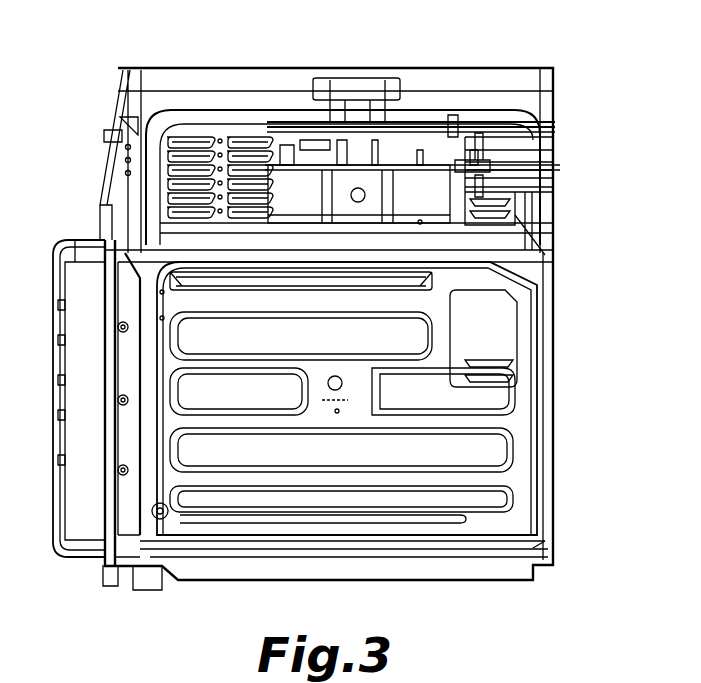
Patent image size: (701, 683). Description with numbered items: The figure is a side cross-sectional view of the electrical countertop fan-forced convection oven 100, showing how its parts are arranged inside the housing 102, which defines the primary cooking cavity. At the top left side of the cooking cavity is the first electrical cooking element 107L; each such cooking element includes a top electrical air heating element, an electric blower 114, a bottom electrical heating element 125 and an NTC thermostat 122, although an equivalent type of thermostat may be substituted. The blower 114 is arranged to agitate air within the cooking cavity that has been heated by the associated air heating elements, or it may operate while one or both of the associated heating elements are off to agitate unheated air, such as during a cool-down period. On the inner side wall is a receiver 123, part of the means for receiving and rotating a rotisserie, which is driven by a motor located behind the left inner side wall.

The fan-forced convection oven 100 is at (562, 197).
The housing 102 is at (558, 521).
The electric blower 114 is at (358, 72).
The first electrical cooking element 107L is at (408, 124).
The NTC thermostat 122 is at (365, 193).
The receiver 123 is at (343, 384).
The bottom electrical heating element 125 is at (370, 526).